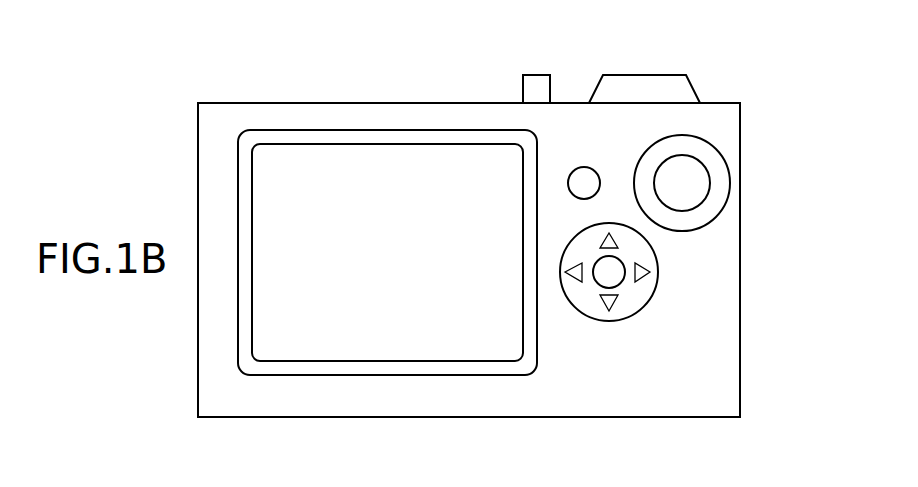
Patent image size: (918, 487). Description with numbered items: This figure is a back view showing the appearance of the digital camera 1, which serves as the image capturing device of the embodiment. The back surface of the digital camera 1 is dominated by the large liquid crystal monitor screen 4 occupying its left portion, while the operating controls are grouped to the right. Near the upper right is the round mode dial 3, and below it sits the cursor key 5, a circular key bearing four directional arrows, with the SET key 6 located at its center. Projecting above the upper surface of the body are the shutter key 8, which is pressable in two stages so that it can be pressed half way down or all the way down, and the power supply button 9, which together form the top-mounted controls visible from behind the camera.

The digital camera 1 is at (764, 95).
The mode dial 3 is at (723, 153).
The liquid crystal monitor screen 4 is at (368, 334).
The cursor key 5 is at (640, 258).
The SET key 6 is at (612, 279).
The shutter key 8 is at (541, 75).
The power supply button 9 is at (633, 75).